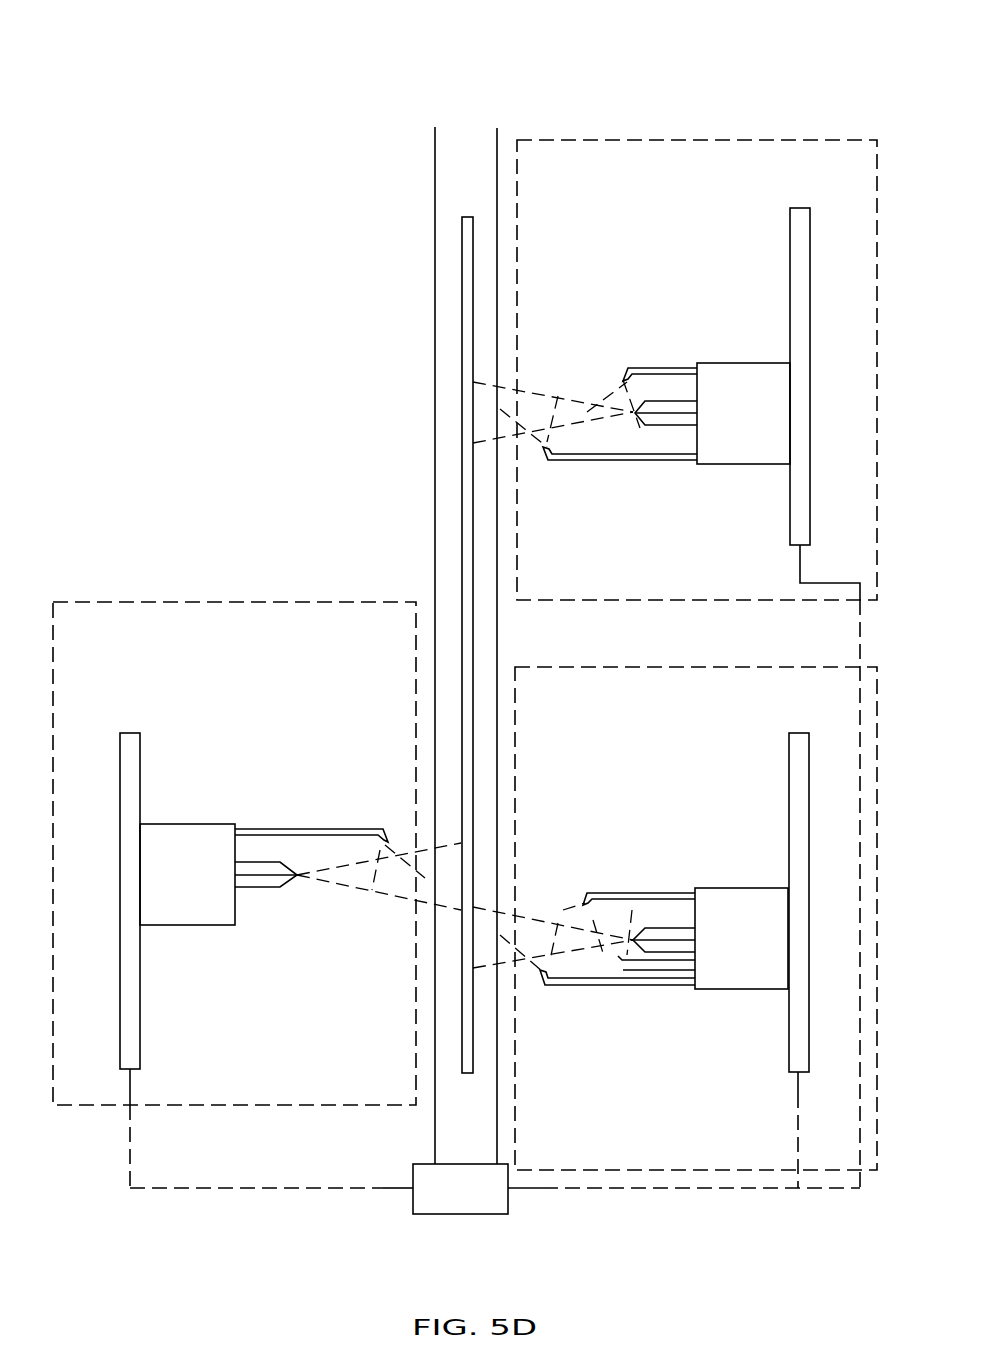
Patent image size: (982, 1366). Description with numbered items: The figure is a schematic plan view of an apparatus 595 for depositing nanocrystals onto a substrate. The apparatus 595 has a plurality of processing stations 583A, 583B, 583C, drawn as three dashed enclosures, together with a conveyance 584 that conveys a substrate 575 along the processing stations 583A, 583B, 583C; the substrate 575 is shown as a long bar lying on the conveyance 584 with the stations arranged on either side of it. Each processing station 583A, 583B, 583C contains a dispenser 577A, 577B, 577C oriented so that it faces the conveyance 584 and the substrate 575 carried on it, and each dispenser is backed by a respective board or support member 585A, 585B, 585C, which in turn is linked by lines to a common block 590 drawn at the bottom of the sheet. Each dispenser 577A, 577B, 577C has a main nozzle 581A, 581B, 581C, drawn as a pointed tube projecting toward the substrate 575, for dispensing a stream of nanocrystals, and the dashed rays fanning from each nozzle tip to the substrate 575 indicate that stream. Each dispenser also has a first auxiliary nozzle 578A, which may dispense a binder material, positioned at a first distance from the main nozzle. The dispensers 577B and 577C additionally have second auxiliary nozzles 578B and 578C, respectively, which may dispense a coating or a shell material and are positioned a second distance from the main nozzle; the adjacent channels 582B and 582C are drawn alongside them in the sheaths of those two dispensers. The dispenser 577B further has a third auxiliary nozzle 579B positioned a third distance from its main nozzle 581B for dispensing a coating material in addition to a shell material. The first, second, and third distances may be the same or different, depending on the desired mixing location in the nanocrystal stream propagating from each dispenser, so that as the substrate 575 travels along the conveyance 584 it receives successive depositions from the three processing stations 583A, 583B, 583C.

The apparatus 595 is at (694, 77).
The substrate 575 is at (467, 217).
The conveyance 584 is at (497, 213).
The controller 590 is at (482, 1203).
The processing station 583A is at (168, 602).
The processing station 583B is at (632, 667).
The processing station 583C is at (633, 140).
The circuit board A 585A is at (128, 733).
The circuit board B 585B is at (797, 733).
The circuit board C 585C is at (800, 208).
The dispenser 577A is at (213, 889).
The dispenser 577B is at (773, 957).
The dispenser 577C is at (773, 429).
The first auxiliary nozzle 578A is at (285, 829).
The second auxiliary nozzle 578B is at (598, 987).
The second auxiliary nozzle 578C is at (647, 462).
The main nozzle 581A is at (267, 888).
The main nozzle 581B is at (660, 925).
The main nozzle 581C is at (670, 400).
The lower channel B 582B is at (677, 973).
The upper channel C 582C is at (645, 367).
The third auxiliary nozzle 579B is at (683, 890).